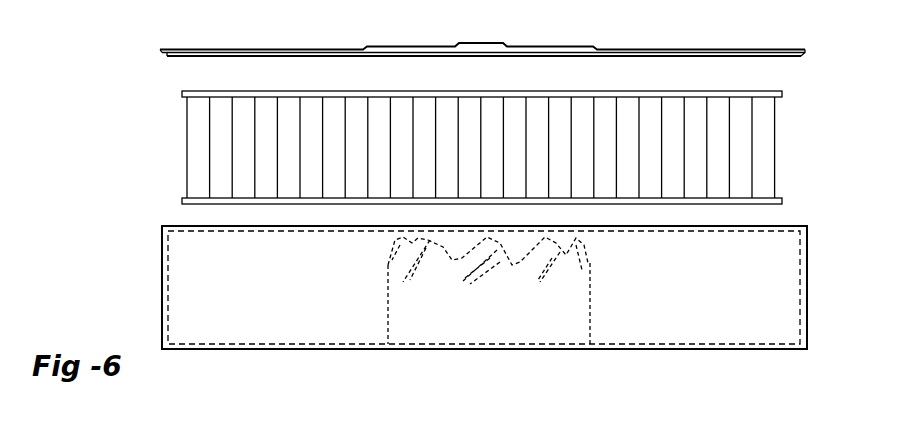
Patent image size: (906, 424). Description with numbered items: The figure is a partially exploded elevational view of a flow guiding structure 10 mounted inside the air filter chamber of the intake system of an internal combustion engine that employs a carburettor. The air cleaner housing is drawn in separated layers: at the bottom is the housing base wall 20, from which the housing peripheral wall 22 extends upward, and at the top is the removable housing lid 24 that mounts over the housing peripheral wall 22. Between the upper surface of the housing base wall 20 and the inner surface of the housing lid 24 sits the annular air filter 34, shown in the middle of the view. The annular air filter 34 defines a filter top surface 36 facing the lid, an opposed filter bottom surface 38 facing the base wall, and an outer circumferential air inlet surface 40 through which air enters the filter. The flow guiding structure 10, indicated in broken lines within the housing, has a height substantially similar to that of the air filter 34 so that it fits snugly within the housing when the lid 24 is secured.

The flow guiding structure 10 is at (598, 304).
The housing base wall 20 is at (238, 347).
The housing peripheral wall 22 is at (162, 290).
The housing lid 24 is at (258, 50).
The annular air filter 34 is at (409, 161).
The filter top surface 36 is at (186, 90).
The filter bottom surface 38 is at (192, 204).
The outer circumferential air inlet surface 40 is at (197, 146).